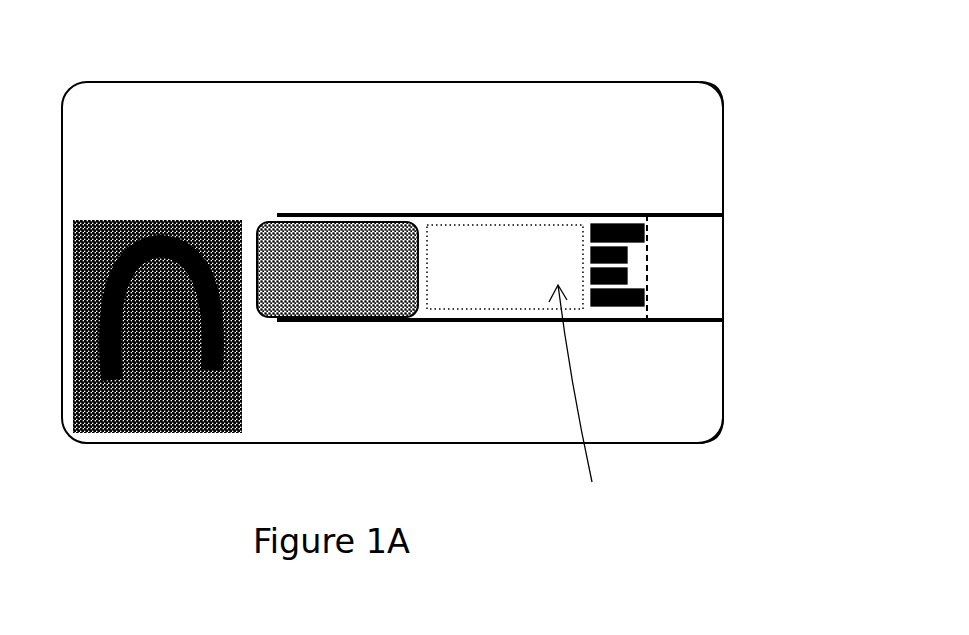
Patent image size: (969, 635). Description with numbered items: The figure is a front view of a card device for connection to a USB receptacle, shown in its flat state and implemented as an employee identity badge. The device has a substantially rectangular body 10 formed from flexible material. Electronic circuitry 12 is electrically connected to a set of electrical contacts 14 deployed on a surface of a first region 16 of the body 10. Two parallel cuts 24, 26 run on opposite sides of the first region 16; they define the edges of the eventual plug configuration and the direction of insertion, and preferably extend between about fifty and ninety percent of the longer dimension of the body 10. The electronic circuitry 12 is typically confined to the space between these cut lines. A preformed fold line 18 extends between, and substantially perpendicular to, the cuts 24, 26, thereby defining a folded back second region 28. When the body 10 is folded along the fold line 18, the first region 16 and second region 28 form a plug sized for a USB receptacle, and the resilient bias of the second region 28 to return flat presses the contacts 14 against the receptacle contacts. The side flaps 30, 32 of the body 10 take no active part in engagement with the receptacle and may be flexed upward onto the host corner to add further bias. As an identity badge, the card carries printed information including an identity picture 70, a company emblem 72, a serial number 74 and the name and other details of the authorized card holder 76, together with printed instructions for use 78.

The body 10 is at (390, 82).
The electronic circuitry 12 is at (582, 404).
The electrical contacts 14 is at (620, 303).
The first region 16 is at (647, 205).
The preformed fold line 18 is at (645, 267).
The cut 24 is at (487, 213).
The cut 26 is at (505, 309).
The folded back second region 28 is at (690, 237).
The side flap 30 is at (702, 137).
The side flap 32 is at (678, 438).
The identity picture 70 is at (158, 434).
The company emblem 72 is at (250, 97).
The serial number 74 is at (575, 103).
The name and other details of the authorized card holder 76 is at (475, 430).
The instructions for use 78 is at (254, 272).